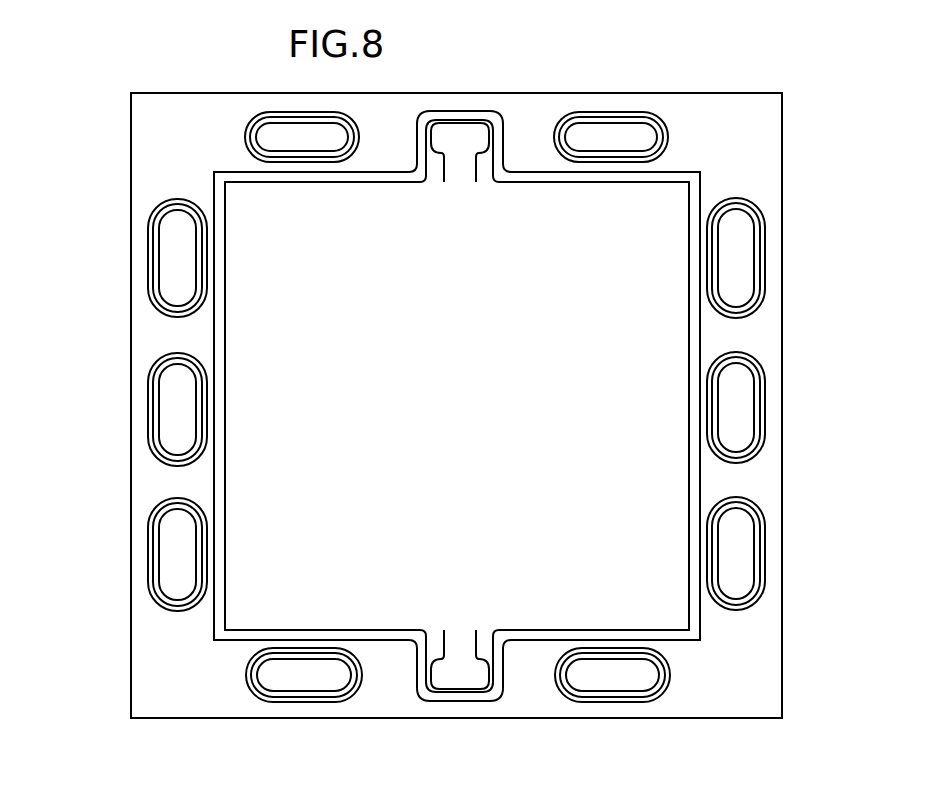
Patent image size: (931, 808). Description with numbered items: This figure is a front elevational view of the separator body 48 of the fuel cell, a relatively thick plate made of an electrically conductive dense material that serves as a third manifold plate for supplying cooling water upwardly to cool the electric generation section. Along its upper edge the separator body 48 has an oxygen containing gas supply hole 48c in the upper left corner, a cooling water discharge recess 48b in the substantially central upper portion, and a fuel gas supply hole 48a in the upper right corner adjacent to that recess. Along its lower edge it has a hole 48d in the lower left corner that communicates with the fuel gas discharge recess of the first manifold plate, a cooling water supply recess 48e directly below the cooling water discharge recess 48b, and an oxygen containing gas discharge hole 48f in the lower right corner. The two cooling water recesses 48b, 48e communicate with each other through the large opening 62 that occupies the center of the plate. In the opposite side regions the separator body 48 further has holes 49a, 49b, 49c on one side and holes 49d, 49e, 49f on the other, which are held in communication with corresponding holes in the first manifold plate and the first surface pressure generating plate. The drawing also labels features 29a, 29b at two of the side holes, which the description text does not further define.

The separator body 48 is at (608, 76).
The fuel gas supply hole 48a is at (603, 140).
The cooling water discharge recess 48b is at (455, 137).
The oxygen containing gas supply hole 48c is at (305, 142).
The hole 48d is at (307, 670).
The cooling water supply recess 48e is at (458, 675).
The oxygen containing gas discharge hole 48f is at (608, 677).
The hole 49a is at (778, 258).
The hole 49b is at (742, 412).
The hole 49c is at (748, 557).
The hole 49d is at (135, 258).
The hole 49e is at (175, 397).
The hole 49f is at (167, 547).
The projection 29a is at (754, 291).
The projection 29b is at (166, 274).
The large opening 62 is at (466, 421).